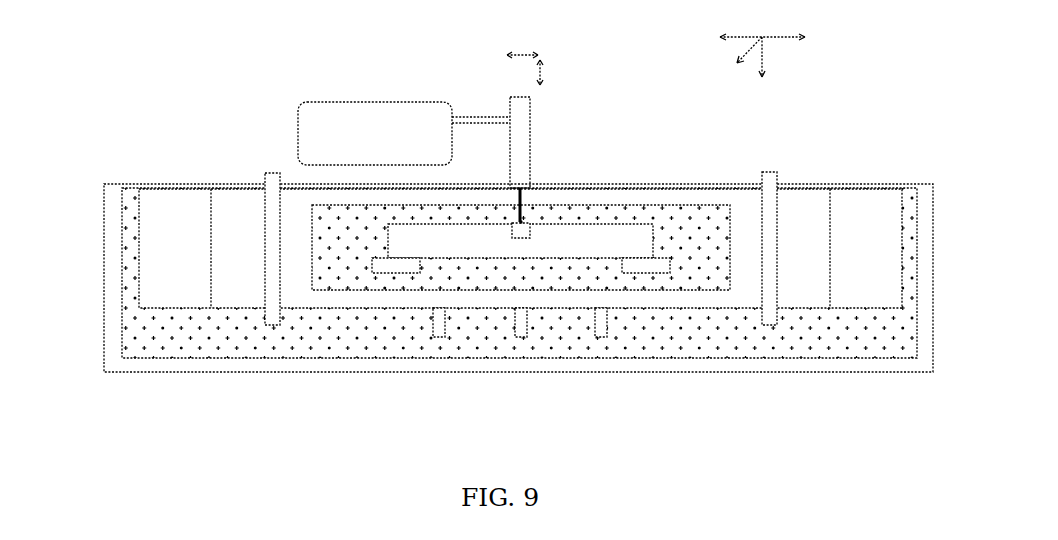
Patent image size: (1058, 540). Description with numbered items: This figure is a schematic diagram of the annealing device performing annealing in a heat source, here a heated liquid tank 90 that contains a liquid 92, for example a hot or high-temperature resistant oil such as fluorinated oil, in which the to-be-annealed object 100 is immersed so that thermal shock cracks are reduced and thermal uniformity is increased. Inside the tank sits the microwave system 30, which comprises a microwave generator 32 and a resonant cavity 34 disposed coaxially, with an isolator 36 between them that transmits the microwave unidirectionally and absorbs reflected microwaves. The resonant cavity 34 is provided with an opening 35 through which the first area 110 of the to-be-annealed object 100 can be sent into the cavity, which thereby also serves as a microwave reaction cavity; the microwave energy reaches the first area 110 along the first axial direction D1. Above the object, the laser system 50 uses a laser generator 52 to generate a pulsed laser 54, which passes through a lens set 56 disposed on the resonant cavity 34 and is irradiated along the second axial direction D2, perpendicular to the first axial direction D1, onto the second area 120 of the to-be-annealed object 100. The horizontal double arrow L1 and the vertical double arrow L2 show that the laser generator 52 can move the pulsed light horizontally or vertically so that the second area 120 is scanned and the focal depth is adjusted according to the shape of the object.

The microwave system 30 is at (485, 238).
The microwave generator 32 is at (175, 200).
The resonant cavity 34 is at (717, 195).
The opening 35 is at (627, 205).
The isolator 36 is at (247, 200).
The laser system 50 is at (458, 128).
The laser generator 52 is at (327, 118).
The laser 54 is at (523, 200).
The lens set 56 is at (528, 128).
The heated liquid tank 90 is at (110, 222).
The liquid 92 is at (123, 298).
The to-be-annealed object 100 is at (633, 233).
The first area 110 is at (503, 232).
The second area 120 is at (523, 222).
The horizontal double arrow L1 is at (522, 46).
The vertical double arrow L2 is at (551, 72).
The first axial direction D1 is at (762, 37).
The second axial direction D2 is at (758, 70).